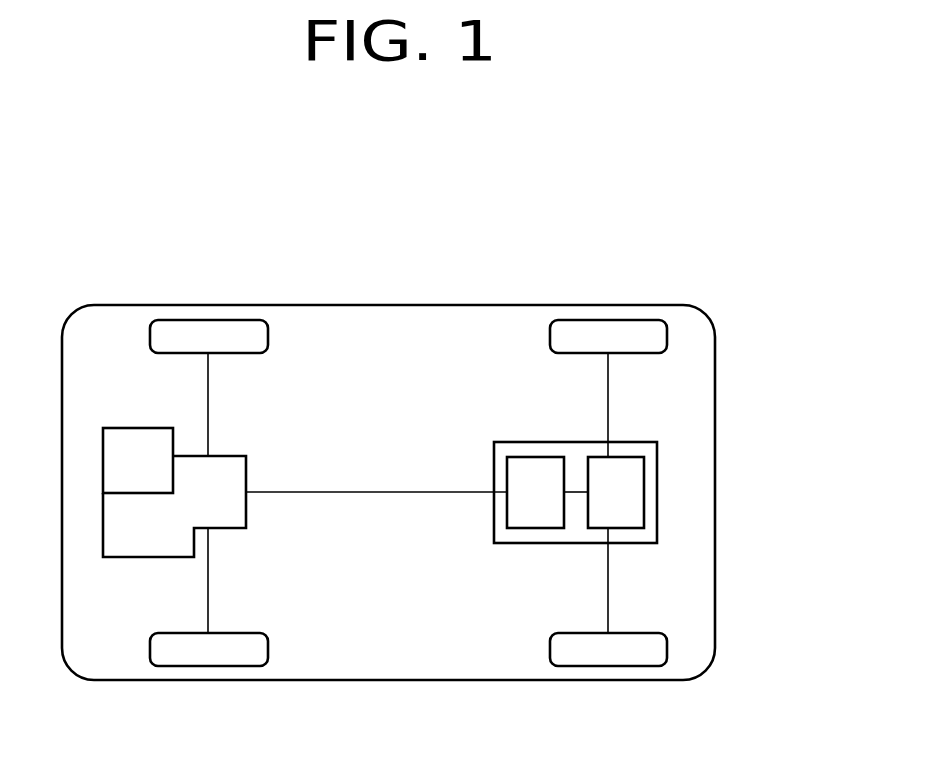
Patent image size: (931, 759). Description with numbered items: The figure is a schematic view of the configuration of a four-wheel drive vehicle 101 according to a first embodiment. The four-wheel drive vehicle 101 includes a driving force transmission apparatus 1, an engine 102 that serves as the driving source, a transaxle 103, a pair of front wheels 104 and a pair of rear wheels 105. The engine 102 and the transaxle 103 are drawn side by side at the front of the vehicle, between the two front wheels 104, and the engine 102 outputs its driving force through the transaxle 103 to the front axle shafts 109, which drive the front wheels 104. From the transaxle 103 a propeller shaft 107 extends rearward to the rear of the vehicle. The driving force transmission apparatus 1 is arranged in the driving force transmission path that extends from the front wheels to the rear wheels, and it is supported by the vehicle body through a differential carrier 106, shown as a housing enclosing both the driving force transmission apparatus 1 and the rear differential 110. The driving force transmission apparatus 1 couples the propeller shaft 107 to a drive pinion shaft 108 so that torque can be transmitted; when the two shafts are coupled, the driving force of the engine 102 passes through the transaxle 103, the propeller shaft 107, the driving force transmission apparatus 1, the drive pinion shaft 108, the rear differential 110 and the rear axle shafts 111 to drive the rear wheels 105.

The driving force transmission apparatus 1 is at (537, 530).
The four-wheel drive vehicle 101 is at (715, 392).
The engine 102 is at (133, 428).
The transaxle 103 is at (133, 560).
The front wheels 104 is at (212, 320).
The rear wheels 105 is at (612, 320).
The differential carrier 106 is at (562, 440).
The propeller shaft 107 is at (357, 492).
The drive pinion shaft 108 is at (578, 492).
The front axle shafts 109 is at (208, 392).
The rear differential 110 is at (625, 530).
The rear axle shafts 111 is at (608, 392).